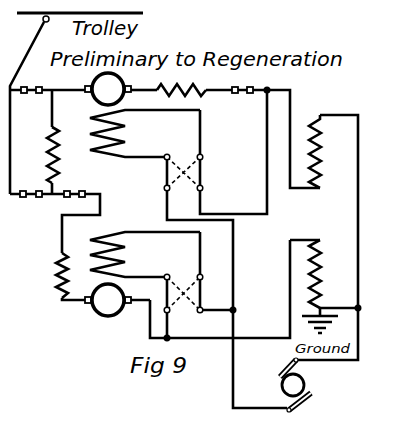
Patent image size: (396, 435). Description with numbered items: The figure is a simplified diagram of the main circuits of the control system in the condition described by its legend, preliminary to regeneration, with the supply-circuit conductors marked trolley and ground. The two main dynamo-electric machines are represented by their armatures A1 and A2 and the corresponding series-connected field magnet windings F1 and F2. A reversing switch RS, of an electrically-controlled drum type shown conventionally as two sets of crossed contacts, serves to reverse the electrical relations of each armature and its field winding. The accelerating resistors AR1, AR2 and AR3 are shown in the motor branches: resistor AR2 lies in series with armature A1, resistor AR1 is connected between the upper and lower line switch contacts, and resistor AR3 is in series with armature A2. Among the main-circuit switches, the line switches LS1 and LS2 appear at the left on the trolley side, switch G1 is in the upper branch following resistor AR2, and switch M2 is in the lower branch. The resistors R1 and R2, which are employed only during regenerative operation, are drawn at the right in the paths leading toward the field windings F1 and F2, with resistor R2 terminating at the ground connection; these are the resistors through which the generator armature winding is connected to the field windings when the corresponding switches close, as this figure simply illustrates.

The armature A1 is at (108, 89).
The armature A2 is at (108, 300).
The field magnet winding F1 is at (145, 133).
The field magnet winding F2 is at (145, 254).
The accelerating resistor AR1 is at (41, 155).
The accelerating resistor AR2 is at (181, 94).
The accelerating resistor AR3 is at (42, 275).
The resistor R1 is at (327, 151).
The resistor R2 is at (327, 274).
The reversing switch RS is at (192, 233).
The main-circuit switch LS1 is at (29, 188).
The main-circuit switch LS2 is at (31, 84).
The main-circuit switch M2 is at (74, 188).
The main-circuit switch G1 is at (242, 96).